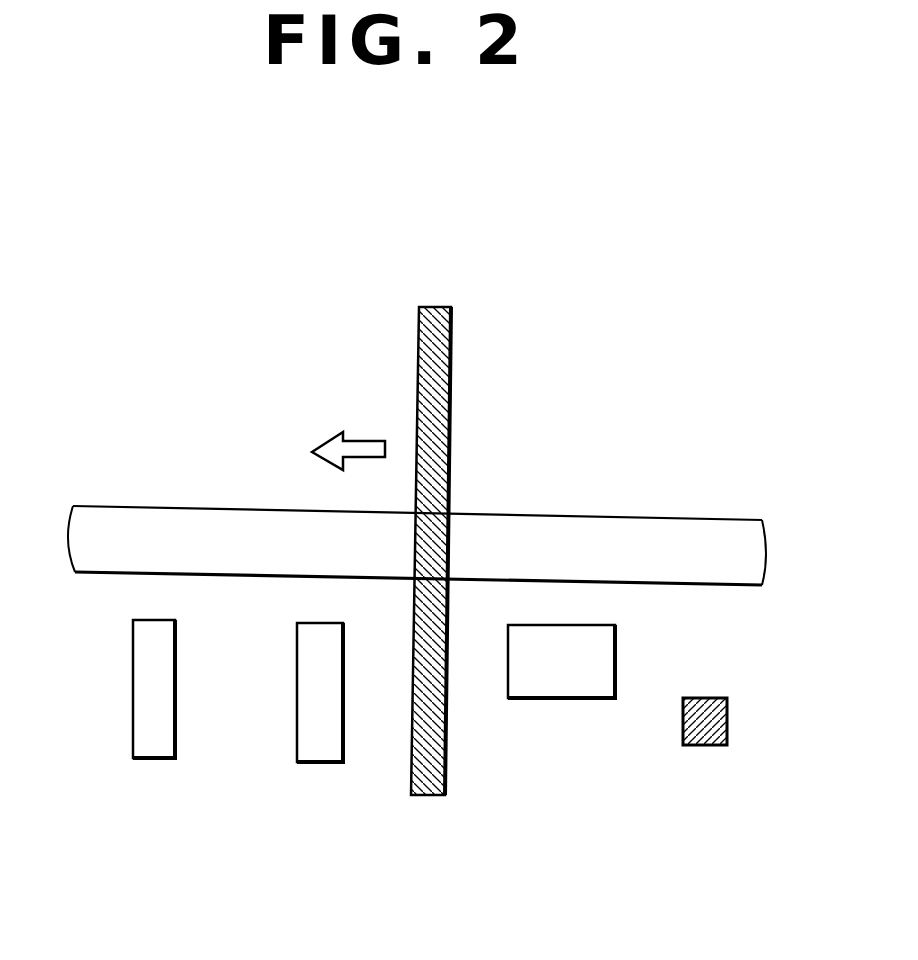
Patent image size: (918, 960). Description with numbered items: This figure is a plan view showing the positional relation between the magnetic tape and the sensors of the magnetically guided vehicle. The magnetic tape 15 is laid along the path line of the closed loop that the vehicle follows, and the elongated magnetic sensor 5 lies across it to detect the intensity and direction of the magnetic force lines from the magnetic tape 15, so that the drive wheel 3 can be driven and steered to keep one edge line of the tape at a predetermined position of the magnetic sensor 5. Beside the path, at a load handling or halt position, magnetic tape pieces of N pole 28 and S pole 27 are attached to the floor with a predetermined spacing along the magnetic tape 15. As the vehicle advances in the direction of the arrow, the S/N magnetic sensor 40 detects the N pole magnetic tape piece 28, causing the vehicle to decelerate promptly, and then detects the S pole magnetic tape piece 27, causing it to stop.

The drive wheel 3 is at (555, 680).
The magnetic sensor 5 is at (438, 307).
The magnetic tape 15 is at (141, 515).
The S pole magnetic tape piece 27 is at (152, 745).
The N pole magnetic tape piece 28 is at (322, 750).
The S/N magnetic sensor 40 is at (727, 720).